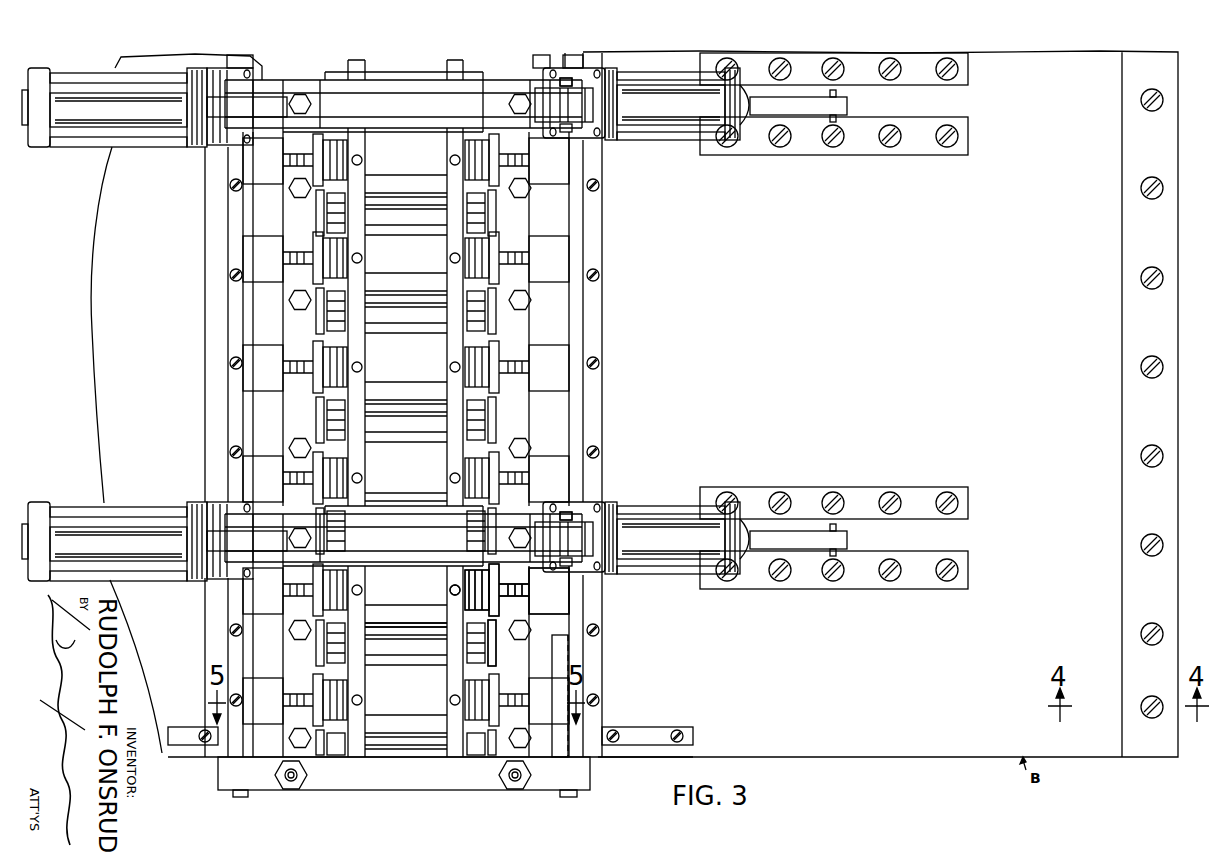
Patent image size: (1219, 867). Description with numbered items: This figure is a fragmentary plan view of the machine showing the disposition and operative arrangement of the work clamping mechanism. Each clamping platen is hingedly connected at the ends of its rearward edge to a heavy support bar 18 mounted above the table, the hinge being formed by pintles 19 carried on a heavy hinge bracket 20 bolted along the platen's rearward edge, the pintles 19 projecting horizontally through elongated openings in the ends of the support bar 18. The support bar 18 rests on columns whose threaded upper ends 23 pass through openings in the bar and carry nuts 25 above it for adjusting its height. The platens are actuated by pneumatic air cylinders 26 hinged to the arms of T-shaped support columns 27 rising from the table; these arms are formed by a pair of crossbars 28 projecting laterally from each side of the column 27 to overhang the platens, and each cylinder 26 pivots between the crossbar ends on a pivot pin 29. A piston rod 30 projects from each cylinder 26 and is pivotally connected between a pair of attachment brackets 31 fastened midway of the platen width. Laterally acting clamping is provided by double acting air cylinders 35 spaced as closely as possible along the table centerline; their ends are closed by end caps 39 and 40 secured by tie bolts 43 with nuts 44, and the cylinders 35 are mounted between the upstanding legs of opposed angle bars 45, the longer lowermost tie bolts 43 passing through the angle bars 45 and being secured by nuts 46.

The support bar 18 is at (452, 782).
The pintles 19 is at (240, 793).
The hinge bracket 20 is at (595, 722).
The threaded upper end 23 is at (288, 785).
The nut 25 is at (298, 785).
The air cylinders 26 is at (637, 123).
The T-shaped support columns 27 is at (388, 133).
The crossbars 28 is at (596, 88).
The pivot pin 29 is at (567, 138).
The piston rod 30 is at (801, 103).
The attachment brackets 31 is at (960, 81).
The double acting air cylinders 35 is at (426, 372).
The end cap 39 is at (450, 472).
The end cap 40 is at (360, 386).
The tie bolts 43 is at (402, 438).
The nuts 44 is at (467, 627).
The angle bars 45 is at (488, 428).
The nuts 46 is at (492, 660).